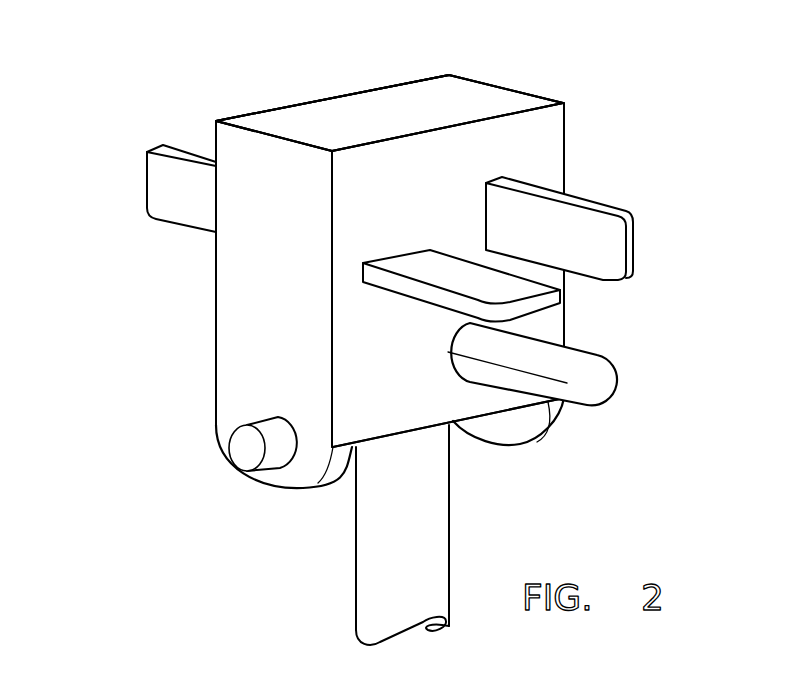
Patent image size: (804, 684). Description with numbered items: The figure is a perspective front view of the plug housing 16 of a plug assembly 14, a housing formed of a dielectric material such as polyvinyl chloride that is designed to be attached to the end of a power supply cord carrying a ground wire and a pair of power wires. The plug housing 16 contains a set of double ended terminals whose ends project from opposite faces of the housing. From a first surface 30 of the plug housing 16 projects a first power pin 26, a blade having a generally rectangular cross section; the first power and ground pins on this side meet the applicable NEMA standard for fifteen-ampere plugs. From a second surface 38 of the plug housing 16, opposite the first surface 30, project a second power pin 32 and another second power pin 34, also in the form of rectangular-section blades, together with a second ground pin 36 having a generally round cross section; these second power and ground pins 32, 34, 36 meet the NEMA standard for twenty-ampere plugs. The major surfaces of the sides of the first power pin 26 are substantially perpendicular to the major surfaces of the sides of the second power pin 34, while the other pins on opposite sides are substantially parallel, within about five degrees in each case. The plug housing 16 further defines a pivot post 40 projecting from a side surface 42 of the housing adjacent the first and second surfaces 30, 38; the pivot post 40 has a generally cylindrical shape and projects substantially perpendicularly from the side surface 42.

The plug assembly 14 is at (520, 58).
The plug housing 16 is at (367, 98).
The first power pin 26 is at (160, 198).
The first surface 30 is at (250, 113).
The second power pin 32 is at (613, 208).
The second power pin 34 is at (506, 276).
The second ground pin 36 is at (573, 358).
The second surface 38 is at (463, 147).
The pivot post 40 is at (242, 450).
The side surface 42 is at (564, 160).